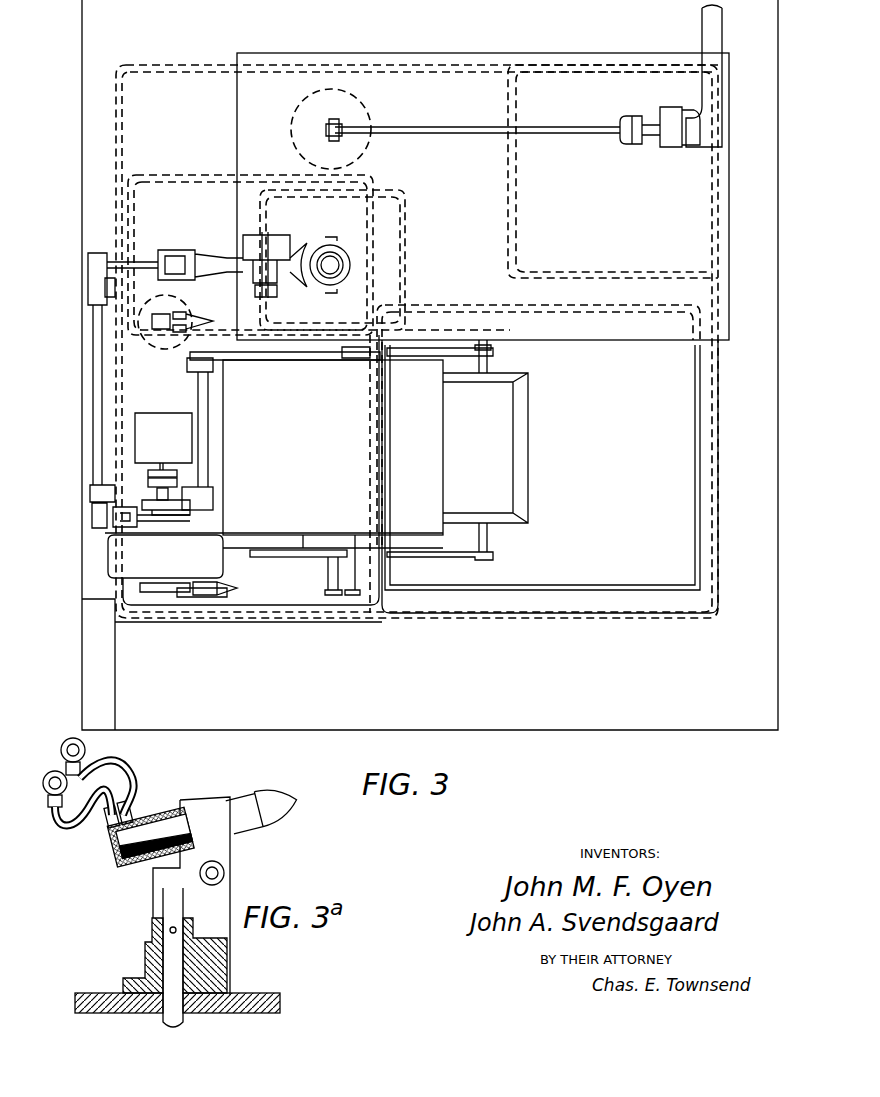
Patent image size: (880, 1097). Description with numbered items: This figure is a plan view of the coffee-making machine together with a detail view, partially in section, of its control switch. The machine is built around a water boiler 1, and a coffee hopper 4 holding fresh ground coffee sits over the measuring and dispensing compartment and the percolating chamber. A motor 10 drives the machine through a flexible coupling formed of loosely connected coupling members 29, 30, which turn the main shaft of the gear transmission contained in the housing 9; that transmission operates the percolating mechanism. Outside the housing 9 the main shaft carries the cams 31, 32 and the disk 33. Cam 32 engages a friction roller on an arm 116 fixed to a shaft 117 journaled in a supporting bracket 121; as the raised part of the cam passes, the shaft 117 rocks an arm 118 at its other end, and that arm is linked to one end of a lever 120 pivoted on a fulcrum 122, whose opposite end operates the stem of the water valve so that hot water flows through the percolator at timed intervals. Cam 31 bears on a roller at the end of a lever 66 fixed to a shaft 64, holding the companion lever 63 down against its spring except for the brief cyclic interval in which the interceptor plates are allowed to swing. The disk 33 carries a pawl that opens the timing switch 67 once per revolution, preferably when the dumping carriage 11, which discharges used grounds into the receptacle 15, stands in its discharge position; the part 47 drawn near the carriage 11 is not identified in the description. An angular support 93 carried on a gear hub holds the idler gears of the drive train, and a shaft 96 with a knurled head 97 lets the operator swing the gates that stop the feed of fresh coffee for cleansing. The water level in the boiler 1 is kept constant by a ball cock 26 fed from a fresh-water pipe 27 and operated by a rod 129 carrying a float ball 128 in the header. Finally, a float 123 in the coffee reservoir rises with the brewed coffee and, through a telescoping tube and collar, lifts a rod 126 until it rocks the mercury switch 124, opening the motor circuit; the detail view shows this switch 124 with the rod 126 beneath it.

In FIG. 3, the water boiler 1 is at (720, 482).
In FIG. 3, the coffee hopper 4 is at (441, 450).
In FIG. 3, the transmission housing 9 is at (110, 556).
In FIG. 3, the motor 10 is at (150, 420).
In FIG. 3, the dumping carriage 11 is at (520, 465).
In FIG. 3, the receptacle 15 is at (696, 468).
In FIG. 3, the ball cock 26 is at (668, 113).
In FIG. 3, the pipe 27 is at (708, 44).
In FIG. 3, the coupling member 29 is at (177, 473).
In FIG. 3, the coupling member 30 is at (172, 483).
In FIG. 3, the cam 31 is at (165, 497).
In FIG. 3, the cam 32 is at (192, 514).
In FIG. 3, the disk 33 is at (150, 589).
In FIG. 3, the bracket 47 is at (452, 554).
In FIG. 3, the lever 63 is at (283, 367).
In FIG. 3, the shaft 64 is at (209, 399).
In FIG. 3, the lever 66 is at (214, 498).
In FIG. 3, the timing switch 67 is at (226, 594).
In FIG. 3, the angular support 93 is at (270, 556).
In FIG. 3, the shaft 96 is at (335, 594).
In FIG. 3, the knurled head 97 is at (354, 594).
In FIG. 3, the arm 116 is at (112, 515).
In FIG. 3, the shaft 117 is at (97, 426).
In FIG. 3, the arm 118 is at (138, 262).
In FIG. 3, the lever 120 is at (192, 254).
In FIG. 3, the supporting bracket 121 is at (98, 484).
In FIG. 3, the fulcrum 122 is at (252, 240).
In FIG. 3, the float 123 is at (147, 340).
In FIG. 3, the mercury switch 124 is at (213, 322).
In FIG. 3A, the mercury switch 124 is at (277, 782).
In FIG. 3A, the rod 126 is at (172, 905).
In FIG. 3, the float ball 128 is at (341, 106).
In FIG. 3, the rod 129 is at (575, 128).